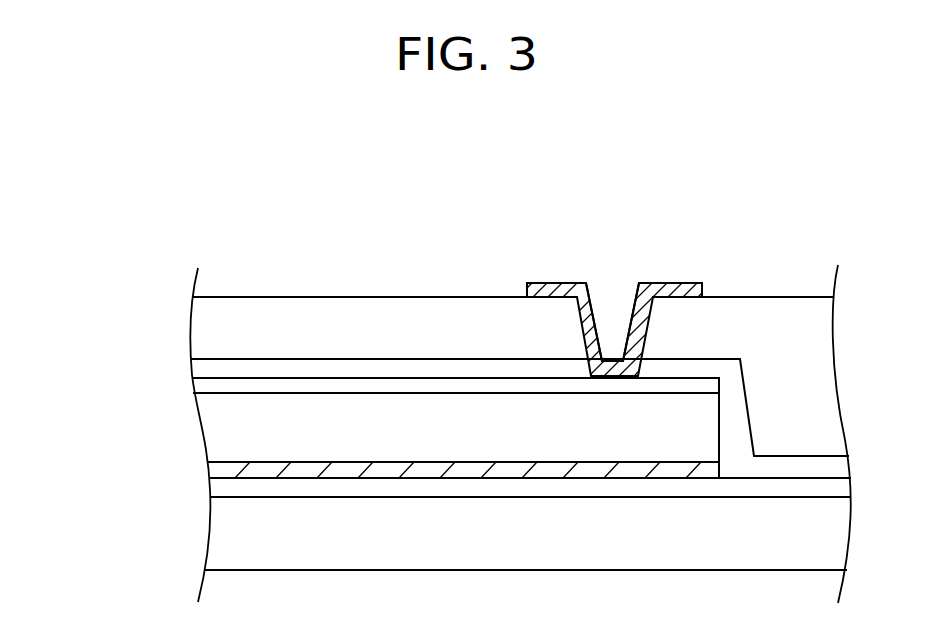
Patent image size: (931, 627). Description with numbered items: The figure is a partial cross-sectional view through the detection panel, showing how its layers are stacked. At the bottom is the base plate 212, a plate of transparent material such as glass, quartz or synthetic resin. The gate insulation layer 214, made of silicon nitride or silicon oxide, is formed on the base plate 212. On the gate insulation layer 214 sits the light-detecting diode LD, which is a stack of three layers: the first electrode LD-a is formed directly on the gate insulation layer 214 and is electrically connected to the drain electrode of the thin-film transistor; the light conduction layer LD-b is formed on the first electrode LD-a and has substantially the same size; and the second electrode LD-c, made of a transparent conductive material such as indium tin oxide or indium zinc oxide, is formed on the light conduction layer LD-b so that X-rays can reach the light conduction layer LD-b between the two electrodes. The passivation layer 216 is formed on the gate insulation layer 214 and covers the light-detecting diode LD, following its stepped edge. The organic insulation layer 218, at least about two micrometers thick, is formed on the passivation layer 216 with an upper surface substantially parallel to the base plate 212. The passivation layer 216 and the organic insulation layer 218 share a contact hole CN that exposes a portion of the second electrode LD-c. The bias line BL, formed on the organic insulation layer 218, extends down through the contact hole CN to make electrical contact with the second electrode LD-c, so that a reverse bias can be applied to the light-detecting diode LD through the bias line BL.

The organic insulation layer 218 is at (212, 332).
The passivation layer 216 is at (212, 368).
The light-detecting diode LD is at (374, 433).
The second electrode LD-c is at (203, 387).
The light conduction layer LD-b is at (212, 428).
The first electrode LD-a is at (225, 472).
The gate insulation layer 214 is at (213, 488).
The base plate 212 is at (225, 538).
The bias line BL is at (553, 293).
The contact hole CN is at (620, 320).